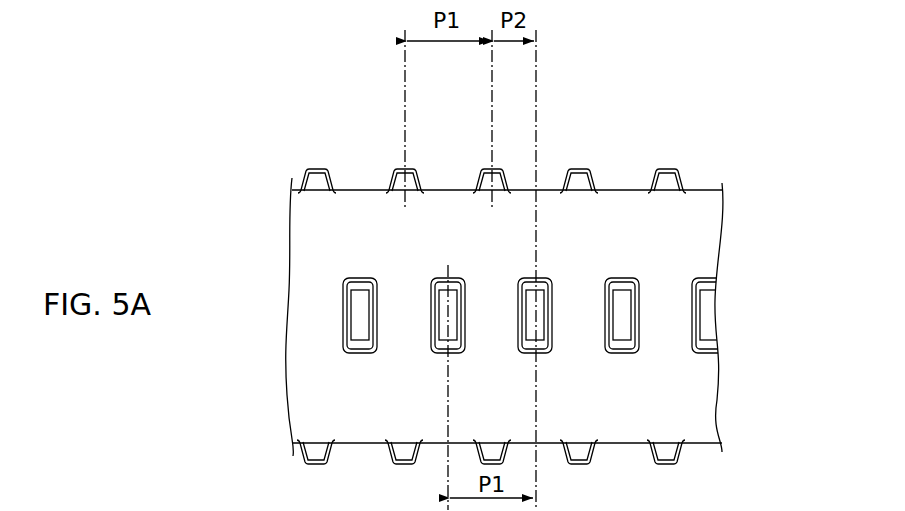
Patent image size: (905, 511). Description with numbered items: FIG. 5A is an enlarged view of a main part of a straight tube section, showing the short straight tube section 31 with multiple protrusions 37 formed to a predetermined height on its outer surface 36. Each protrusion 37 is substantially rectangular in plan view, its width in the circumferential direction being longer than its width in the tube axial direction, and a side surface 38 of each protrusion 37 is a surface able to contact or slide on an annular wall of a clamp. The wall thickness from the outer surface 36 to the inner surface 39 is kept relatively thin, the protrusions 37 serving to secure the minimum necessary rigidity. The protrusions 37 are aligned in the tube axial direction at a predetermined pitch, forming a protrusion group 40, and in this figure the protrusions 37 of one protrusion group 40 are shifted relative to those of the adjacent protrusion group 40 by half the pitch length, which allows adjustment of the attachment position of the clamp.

The short straight tube section 31 is at (689, 242).
The outer surface 36 is at (315, 383).
The protrusion 37 is at (317, 169).
The side surface 38 is at (432, 311).
The inner surface 39 is at (283, 354).
The protrusion group 40 is at (687, 178).